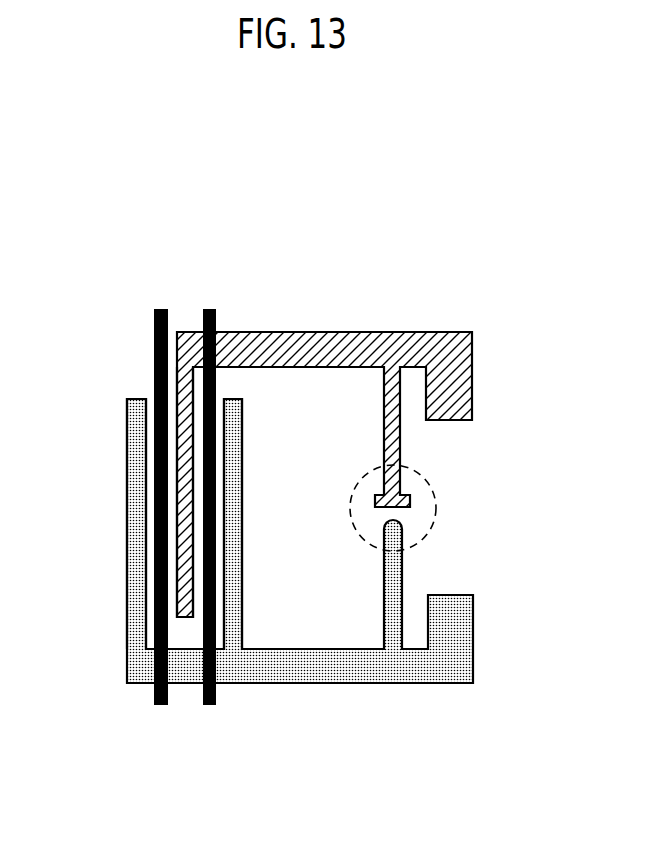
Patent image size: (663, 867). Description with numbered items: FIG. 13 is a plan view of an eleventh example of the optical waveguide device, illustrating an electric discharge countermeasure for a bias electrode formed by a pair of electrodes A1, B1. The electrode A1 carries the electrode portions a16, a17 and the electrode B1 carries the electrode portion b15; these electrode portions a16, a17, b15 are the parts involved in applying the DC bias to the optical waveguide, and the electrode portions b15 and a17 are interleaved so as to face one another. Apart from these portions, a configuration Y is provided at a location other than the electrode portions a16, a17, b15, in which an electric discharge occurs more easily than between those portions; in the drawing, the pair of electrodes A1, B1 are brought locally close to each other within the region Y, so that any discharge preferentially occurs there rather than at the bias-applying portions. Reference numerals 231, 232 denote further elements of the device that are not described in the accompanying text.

The electrode A1 is at (477, 691).
The electrode B1 is at (482, 331).
The electrode portion a16 is at (130, 517).
The electrode portion a17 is at (235, 518).
The electrode portion b15 is at (190, 372).
The first electrode 231 is at (161, 706).
The second electrode 232 is at (210, 706).
The configuration Y is at (437, 510).